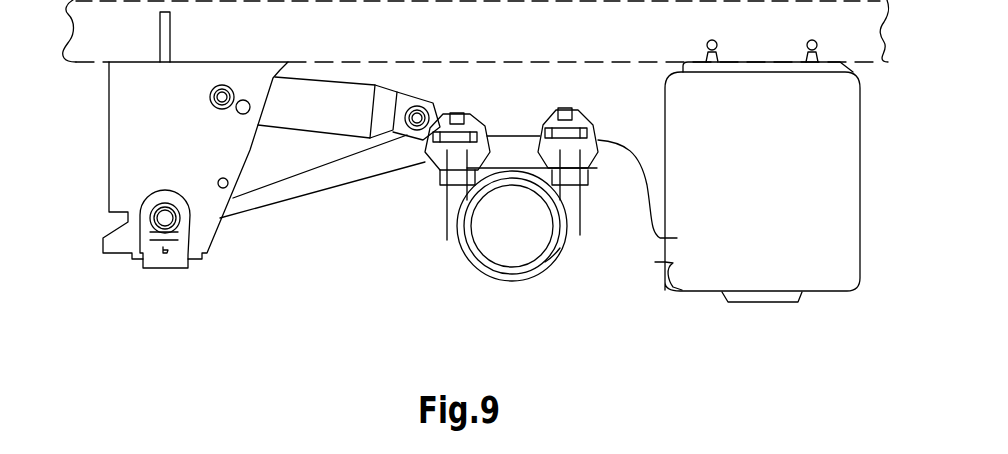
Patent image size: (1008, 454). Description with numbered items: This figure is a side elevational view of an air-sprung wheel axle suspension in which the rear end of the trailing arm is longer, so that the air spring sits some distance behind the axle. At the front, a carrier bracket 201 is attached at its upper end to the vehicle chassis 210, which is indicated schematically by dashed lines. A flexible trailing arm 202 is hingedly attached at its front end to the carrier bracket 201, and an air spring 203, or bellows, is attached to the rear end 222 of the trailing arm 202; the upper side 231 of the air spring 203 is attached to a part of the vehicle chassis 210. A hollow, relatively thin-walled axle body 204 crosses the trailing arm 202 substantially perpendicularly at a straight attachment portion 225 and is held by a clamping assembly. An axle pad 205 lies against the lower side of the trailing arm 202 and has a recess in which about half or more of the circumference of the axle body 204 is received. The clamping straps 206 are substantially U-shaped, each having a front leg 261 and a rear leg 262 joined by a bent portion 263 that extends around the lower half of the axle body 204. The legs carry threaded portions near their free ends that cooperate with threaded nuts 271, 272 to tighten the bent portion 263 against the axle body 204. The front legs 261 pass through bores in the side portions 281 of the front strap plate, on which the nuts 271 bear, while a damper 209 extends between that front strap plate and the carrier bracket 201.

The carrier bracket 201 is at (122, 148).
The trailing arm 202 is at (270, 193).
The air spring 203 is at (840, 168).
The axle body 204 is at (545, 262).
The axle pad 205 is at (518, 178).
The clamping straps 206 is at (458, 253).
The damper 209 is at (298, 112).
The vehicle chassis 210 is at (613, 32).
The rear end 222 is at (653, 257).
The attachment portion 225 is at (505, 153).
The upper side 231 is at (840, 63).
The front leg 261 is at (448, 207).
The rear leg 262 is at (562, 221).
The bent portion 263 is at (517, 280).
The threaded nut 271 is at (457, 108).
The threaded nut 272 is at (566, 130).
The side portions 281 is at (427, 160).